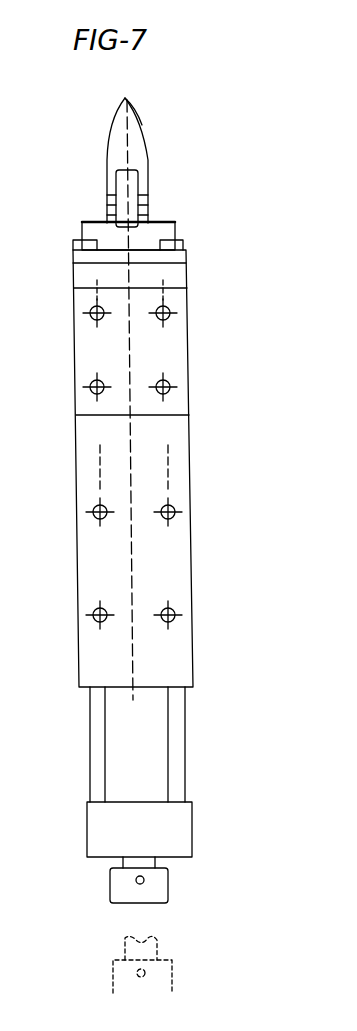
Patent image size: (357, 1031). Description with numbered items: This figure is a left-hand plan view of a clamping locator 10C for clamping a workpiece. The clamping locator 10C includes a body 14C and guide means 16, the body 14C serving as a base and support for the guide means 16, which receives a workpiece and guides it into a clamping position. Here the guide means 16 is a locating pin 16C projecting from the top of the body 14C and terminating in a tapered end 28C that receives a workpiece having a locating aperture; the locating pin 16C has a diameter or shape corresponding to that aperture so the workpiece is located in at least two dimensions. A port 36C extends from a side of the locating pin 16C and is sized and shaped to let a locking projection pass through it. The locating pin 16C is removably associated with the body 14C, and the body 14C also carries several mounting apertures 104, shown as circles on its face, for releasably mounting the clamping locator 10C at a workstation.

The clamping locator 10C is at (294, 129).
The guide means 16 is at (192, 118).
The locating pin 16C is at (115, 128).
The tapered end 28C is at (135, 108).
The port 36C is at (133, 178).
The body 14C is at (178, 437).
The mounting apertures 104 is at (172, 380).